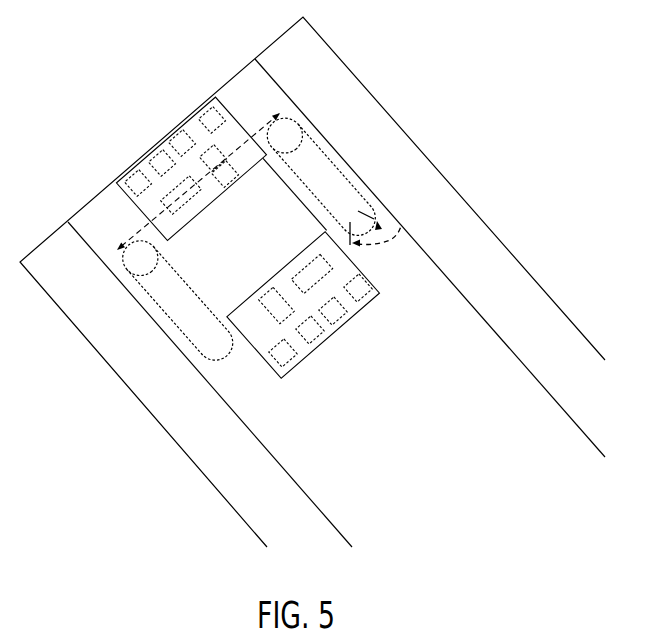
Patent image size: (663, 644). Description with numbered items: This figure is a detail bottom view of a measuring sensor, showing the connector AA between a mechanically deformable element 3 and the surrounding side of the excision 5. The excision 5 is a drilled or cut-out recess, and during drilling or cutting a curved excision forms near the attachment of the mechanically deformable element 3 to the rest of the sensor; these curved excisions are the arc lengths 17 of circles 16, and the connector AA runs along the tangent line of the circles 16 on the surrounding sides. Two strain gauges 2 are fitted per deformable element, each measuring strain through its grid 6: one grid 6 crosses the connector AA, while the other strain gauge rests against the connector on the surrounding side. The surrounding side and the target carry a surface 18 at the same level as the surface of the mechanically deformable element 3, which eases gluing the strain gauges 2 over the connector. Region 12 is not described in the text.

The strain gauges 2 is at (258, 327).
The mechanically deformable element 3 is at (247, 242).
The excision 5 is at (182, 313).
The grid 6 is at (277, 307).
The edge strip 12 is at (393, 163).
The circles 16 is at (282, 128).
The arc lengths 17 is at (400, 228).
The surface 18 is at (247, 93).